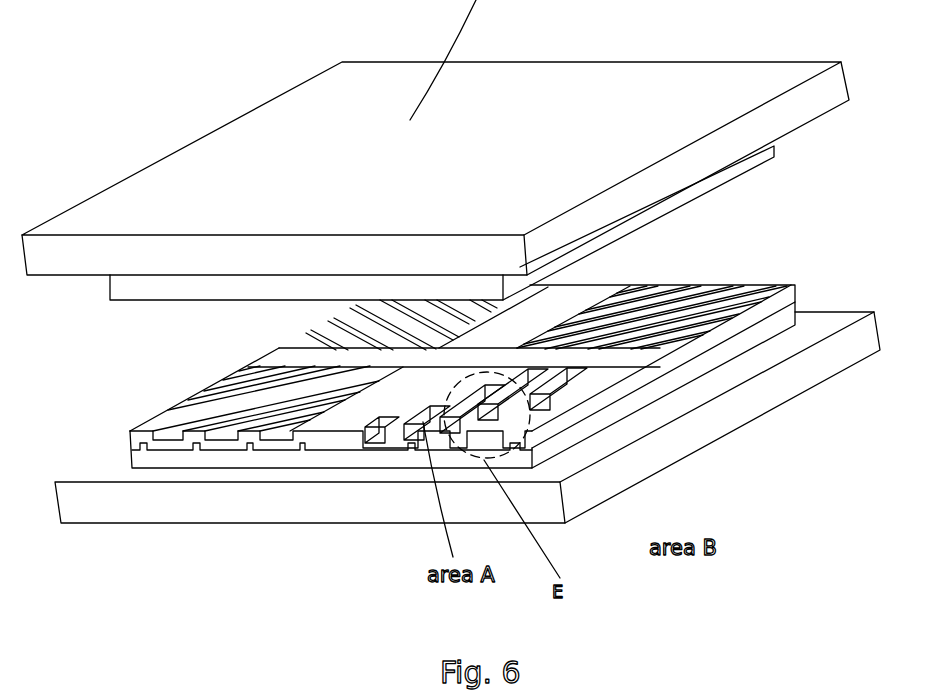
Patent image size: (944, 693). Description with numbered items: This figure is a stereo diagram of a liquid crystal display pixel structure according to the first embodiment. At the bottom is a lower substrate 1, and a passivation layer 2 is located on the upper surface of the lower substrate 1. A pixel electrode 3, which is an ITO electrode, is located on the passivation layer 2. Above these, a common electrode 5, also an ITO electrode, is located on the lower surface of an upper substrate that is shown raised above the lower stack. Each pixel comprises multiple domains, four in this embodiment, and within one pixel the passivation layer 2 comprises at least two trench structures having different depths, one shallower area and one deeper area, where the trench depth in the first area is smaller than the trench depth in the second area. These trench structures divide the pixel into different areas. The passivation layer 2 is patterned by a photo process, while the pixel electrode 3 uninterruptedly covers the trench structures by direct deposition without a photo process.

The lower substrate 1 is at (702, 427).
The passivation layer 2 is at (175, 460).
The pixel electrode 3 is at (285, 423).
The common electrode 5 is at (712, 180).